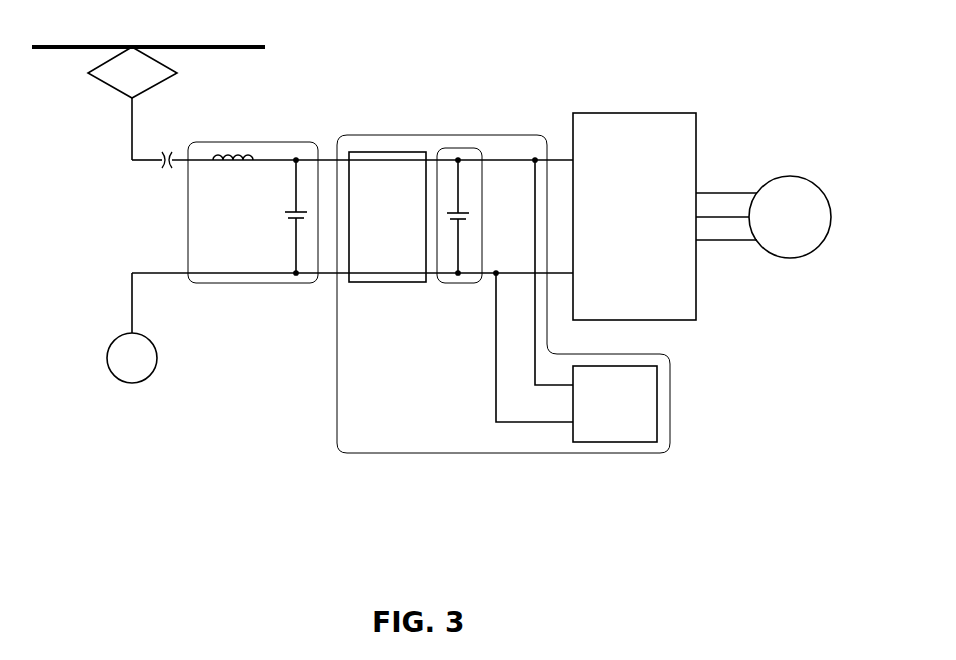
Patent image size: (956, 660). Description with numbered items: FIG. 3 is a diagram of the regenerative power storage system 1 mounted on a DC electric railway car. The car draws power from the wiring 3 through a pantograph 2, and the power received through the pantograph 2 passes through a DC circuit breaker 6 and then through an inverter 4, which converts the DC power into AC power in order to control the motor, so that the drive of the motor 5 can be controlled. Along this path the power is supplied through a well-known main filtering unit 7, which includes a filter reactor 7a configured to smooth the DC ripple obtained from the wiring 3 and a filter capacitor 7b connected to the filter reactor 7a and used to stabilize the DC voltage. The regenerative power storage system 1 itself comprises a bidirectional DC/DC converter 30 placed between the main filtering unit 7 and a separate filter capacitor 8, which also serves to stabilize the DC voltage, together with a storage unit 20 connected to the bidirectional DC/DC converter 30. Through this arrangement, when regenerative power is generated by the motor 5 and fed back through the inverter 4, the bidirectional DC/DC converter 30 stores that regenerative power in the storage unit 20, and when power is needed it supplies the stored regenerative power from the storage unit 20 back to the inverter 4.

The regenerative power storage system 1 is at (503, 135).
The pantograph 2 is at (110, 86).
The wiring 3 is at (67, 46).
The inverter 4 is at (663, 113).
The motor 5 is at (822, 188).
The DC circuit breaker 6 is at (163, 167).
The main filtering unit 7 is at (253, 222).
The filter reactor 7a is at (233, 156).
The filter capacitor 7b is at (287, 216).
The filter capacitor 8 is at (458, 149).
The storage unit 20 is at (615, 443).
The bidirectional DC/DC converter 30 is at (388, 152).